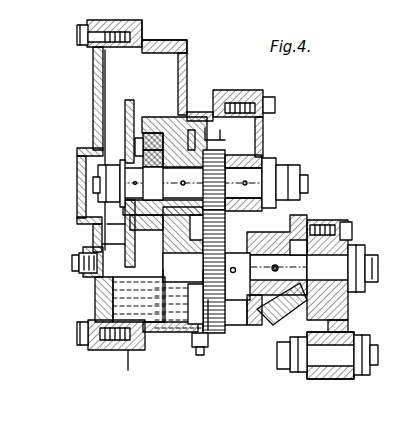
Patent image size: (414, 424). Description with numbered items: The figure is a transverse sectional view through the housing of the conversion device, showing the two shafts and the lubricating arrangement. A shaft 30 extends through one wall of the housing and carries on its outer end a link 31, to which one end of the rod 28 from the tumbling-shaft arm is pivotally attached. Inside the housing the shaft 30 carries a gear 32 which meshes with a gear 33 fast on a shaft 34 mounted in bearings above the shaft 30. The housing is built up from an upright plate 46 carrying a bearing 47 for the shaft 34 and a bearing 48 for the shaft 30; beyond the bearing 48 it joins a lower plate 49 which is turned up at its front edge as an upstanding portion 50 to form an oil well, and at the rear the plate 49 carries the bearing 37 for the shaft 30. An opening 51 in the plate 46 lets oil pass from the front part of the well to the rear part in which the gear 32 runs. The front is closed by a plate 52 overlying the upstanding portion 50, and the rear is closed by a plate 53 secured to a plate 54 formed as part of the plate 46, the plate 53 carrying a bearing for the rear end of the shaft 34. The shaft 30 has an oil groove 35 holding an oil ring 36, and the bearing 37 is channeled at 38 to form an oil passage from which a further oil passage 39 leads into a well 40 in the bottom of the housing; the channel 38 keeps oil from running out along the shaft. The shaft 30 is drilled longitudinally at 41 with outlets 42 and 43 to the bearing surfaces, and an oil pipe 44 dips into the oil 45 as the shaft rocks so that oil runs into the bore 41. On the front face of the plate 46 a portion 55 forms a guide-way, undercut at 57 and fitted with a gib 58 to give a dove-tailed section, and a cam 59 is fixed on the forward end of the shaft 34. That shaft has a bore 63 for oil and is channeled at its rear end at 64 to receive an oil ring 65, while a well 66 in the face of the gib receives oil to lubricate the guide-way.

The rod 28 is at (310, 376).
The shaft 30 is at (318, 228).
The link 31 is at (340, 312).
The gear 32 is at (231, 262).
The gear 33 is at (250, 178).
The shaft 34 is at (262, 172).
The oil groove 35 is at (300, 232).
The oil ring 36 is at (322, 215).
The bearing 37 is at (276, 266).
The channel 38 is at (298, 292).
The oil passage 39 is at (280, 315).
The well 40 is at (263, 332).
The longitudinal bore 41 is at (188, 262).
The outlet 42 is at (198, 284).
The outlet 43 is at (300, 214).
The oil pipe 44 is at (283, 322).
The oil 45 is at (194, 292).
The upright plate 46 is at (190, 55).
The bearing 47 is at (183, 165).
The bearing 48 is at (172, 258).
The lower plate 49 is at (143, 352).
The upstanding portion 50 is at (110, 290).
The opening 51 is at (205, 302).
The plate 52 is at (92, 105).
The plate 53 is at (222, 155).
The plate 54 is at (210, 95).
The portion 55 is at (150, 115).
The undercut 57 is at (107, 226).
The gib 58 is at (145, 136).
The cam 59 is at (110, 243).
The bore 63 is at (95, 202).
The channel 64 is at (285, 178).
The oil ring 65 is at (272, 172).
The well 66 is at (145, 142).